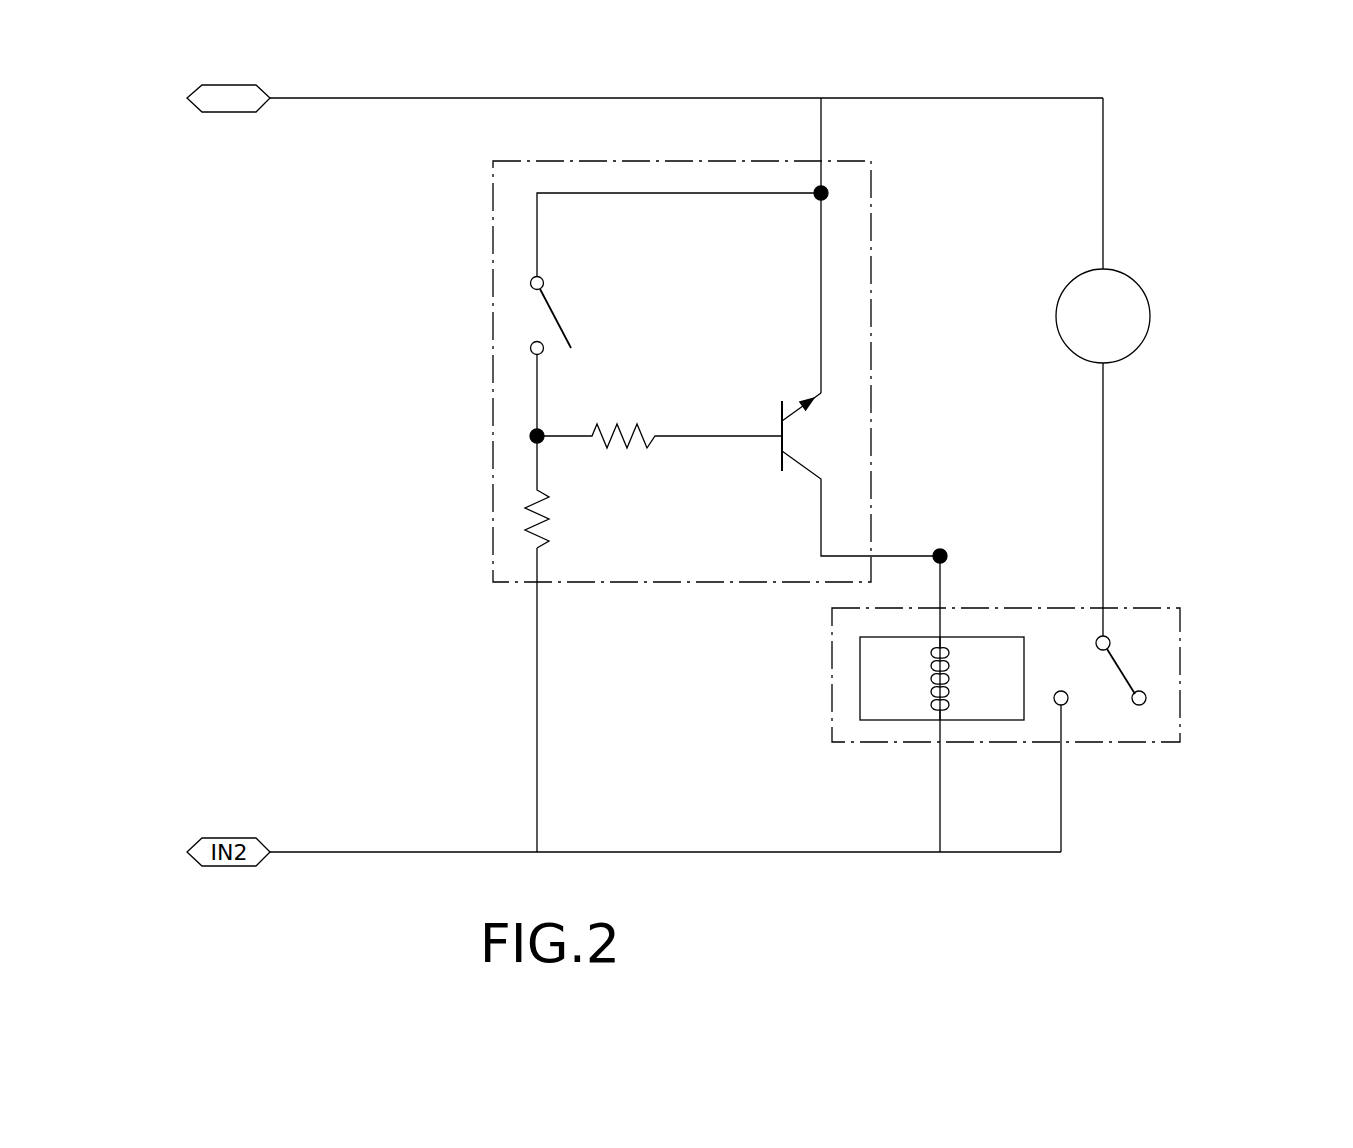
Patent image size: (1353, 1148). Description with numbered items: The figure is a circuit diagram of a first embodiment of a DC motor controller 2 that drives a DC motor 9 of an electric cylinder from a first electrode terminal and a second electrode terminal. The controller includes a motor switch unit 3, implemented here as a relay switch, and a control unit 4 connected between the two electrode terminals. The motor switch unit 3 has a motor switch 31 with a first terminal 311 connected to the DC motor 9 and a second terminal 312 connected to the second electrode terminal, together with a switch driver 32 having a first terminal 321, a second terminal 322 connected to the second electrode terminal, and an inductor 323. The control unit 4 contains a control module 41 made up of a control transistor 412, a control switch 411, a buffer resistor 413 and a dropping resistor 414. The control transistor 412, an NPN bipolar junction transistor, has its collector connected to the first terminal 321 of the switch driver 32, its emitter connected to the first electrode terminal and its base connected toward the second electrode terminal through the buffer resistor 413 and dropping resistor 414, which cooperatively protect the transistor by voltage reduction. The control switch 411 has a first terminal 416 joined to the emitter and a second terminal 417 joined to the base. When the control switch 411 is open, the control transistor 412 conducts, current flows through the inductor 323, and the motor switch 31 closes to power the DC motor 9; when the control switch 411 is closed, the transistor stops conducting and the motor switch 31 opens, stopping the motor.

The power input terminals 2 is at (172, 84).
The motor switch unit 3 is at (1055, 710).
The control unit 4 is at (480, 196).
The DC motor 9 is at (1170, 292).
The motor switch 31 is at (1109, 639).
The first terminal 311 is at (1110, 644).
The second terminal 312 is at (1066, 705).
The switch driver 32 is at (877, 722).
The first terminal 321 is at (940, 637).
The second terminal 322 is at (938, 715).
The inductor 323 is at (953, 703).
The control module 41 is at (586, 314).
The control switch 411 is at (558, 316).
The control transistor 412 is at (781, 420).
The buffer resistor 413 is at (633, 443).
The dropping resistor 414 is at (530, 522).
The first terminal 416 is at (530, 283).
The second terminal 417 is at (530, 348).